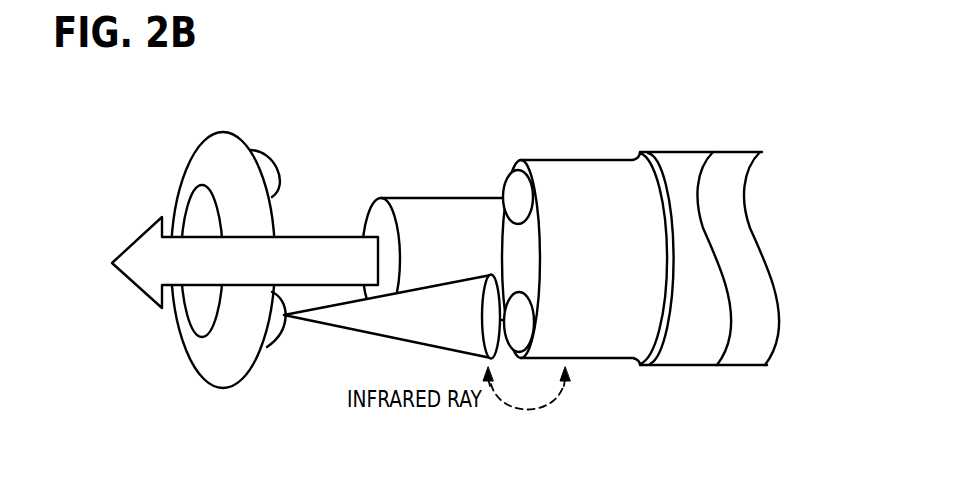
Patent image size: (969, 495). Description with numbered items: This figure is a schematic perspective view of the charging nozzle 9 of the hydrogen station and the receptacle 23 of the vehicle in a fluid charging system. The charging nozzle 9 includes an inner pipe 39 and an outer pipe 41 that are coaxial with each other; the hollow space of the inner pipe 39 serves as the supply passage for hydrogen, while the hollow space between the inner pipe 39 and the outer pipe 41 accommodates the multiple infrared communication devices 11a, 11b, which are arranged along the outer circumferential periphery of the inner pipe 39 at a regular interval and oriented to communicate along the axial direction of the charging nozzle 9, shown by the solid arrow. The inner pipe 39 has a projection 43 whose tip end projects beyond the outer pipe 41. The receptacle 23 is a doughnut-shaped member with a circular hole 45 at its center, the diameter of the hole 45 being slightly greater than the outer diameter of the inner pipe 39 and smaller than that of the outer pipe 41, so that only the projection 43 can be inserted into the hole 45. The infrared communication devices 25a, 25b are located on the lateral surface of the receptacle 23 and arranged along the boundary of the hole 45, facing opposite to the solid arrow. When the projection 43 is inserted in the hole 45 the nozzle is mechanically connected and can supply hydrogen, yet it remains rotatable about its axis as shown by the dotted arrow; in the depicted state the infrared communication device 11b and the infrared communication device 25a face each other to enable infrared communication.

The charging nozzle 9 is at (527, 160).
The infrared communication device 11a is at (507, 190).
The infrared communication device 11b is at (527, 300).
The receptacle 23 is at (208, 141).
The infrared communication device 25a is at (288, 327).
The infrared communication device 25b is at (262, 157).
The inner pipe 39 is at (447, 206).
The outer pipe 41 is at (590, 161).
The projection 43 is at (393, 197).
The hole 45 is at (202, 210).